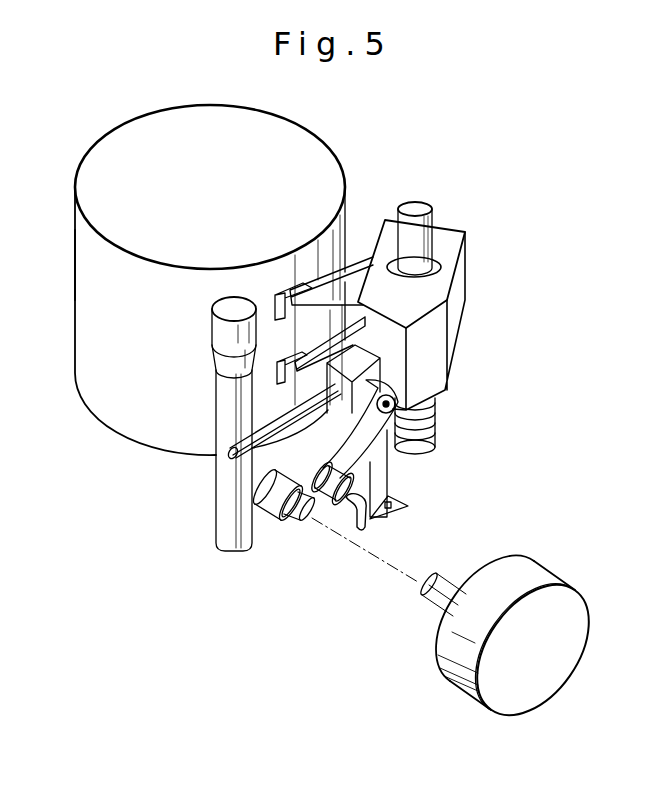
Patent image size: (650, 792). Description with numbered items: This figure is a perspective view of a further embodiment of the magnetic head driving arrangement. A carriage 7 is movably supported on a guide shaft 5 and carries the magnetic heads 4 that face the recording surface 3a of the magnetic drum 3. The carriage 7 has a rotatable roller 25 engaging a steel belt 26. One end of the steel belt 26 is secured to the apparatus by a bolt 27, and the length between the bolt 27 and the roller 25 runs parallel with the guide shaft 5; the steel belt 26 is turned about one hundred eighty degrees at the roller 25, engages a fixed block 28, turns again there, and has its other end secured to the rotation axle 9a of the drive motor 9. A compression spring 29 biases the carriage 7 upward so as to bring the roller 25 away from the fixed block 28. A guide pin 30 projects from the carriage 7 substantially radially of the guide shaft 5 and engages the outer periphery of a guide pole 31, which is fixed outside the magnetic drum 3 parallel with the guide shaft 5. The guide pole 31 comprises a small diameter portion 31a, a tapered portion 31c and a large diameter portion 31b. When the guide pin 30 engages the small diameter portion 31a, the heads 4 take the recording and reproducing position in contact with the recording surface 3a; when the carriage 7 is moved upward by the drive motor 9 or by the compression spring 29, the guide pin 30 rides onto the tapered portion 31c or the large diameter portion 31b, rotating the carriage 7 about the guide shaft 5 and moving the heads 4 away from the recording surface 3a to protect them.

The magnetic drum 3 is at (340, 158).
The recording surface 3a is at (83, 261).
The magnetic heads 4 is at (281, 297).
The guide shaft 5 is at (420, 204).
The carriage 7 is at (457, 303).
The drive motor 9 is at (566, 593).
The rotation axle 9a is at (289, 513).
The roller 25 is at (396, 402).
The steel belt 26 is at (390, 476).
The bolt 27 is at (410, 505).
The fixed block 28 is at (362, 498).
The compression spring 29 is at (434, 422).
The guide pin 30 is at (268, 445).
The guide pole 31 is at (201, 448).
The small diameter portion 31a is at (199, 460).
The large diameter portion 31b is at (206, 305).
The tapered portion 31c is at (206, 345).